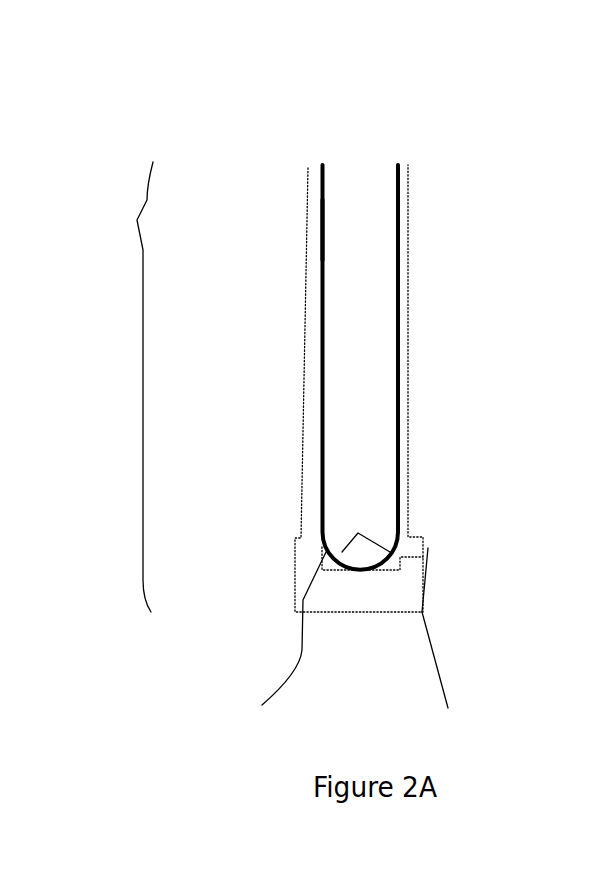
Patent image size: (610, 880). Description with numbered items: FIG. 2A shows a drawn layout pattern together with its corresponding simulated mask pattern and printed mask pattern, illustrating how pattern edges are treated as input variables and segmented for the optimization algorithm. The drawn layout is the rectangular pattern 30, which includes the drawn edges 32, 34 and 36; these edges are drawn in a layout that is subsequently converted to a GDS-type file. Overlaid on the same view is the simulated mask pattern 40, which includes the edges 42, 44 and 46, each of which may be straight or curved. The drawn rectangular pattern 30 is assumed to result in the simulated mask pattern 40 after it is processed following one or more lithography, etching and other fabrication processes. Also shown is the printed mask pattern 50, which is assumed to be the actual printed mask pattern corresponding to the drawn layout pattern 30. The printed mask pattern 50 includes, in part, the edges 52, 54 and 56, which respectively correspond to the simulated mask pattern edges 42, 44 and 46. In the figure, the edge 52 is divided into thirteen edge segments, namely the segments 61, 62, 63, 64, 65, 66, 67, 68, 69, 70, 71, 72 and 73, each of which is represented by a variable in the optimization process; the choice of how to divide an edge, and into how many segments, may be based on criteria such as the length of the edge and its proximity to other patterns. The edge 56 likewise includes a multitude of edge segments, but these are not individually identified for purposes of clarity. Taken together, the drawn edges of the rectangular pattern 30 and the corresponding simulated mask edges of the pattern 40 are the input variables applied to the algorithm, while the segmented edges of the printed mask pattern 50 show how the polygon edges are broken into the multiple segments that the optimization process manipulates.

The rectangular pattern 30 is at (325, 192).
The edge 32 is at (285, 649).
The edge 34 is at (388, 573).
The edge 36 is at (428, 548).
The simulated mask pattern 40 is at (323, 167).
The edge 42 is at (327, 243).
The edge 44 is at (366, 522).
The edge 46 is at (397, 293).
The printed mask pattern 50 is at (313, 170).
The edge 52 is at (117, 387).
The edge 54 is at (444, 682).
The edge 56 is at (408, 312).
The edge segment 61 is at (312, 170).
The edge segment 62 is at (308, 200).
The edge segment 63 is at (306, 228).
The edge segment 64 is at (306, 265).
The edge segment 65 is at (305, 287).
The edge segment 66 is at (305, 318).
The edge segment 67 is at (303, 350).
The edge segment 68 is at (302, 400).
The edge segment 69 is at (303, 433).
The edge segment 70 is at (300, 463).
The edge segment 71 is at (297, 498).
The edge segment 72 is at (297, 520).
The edge segment 73 is at (293, 567).